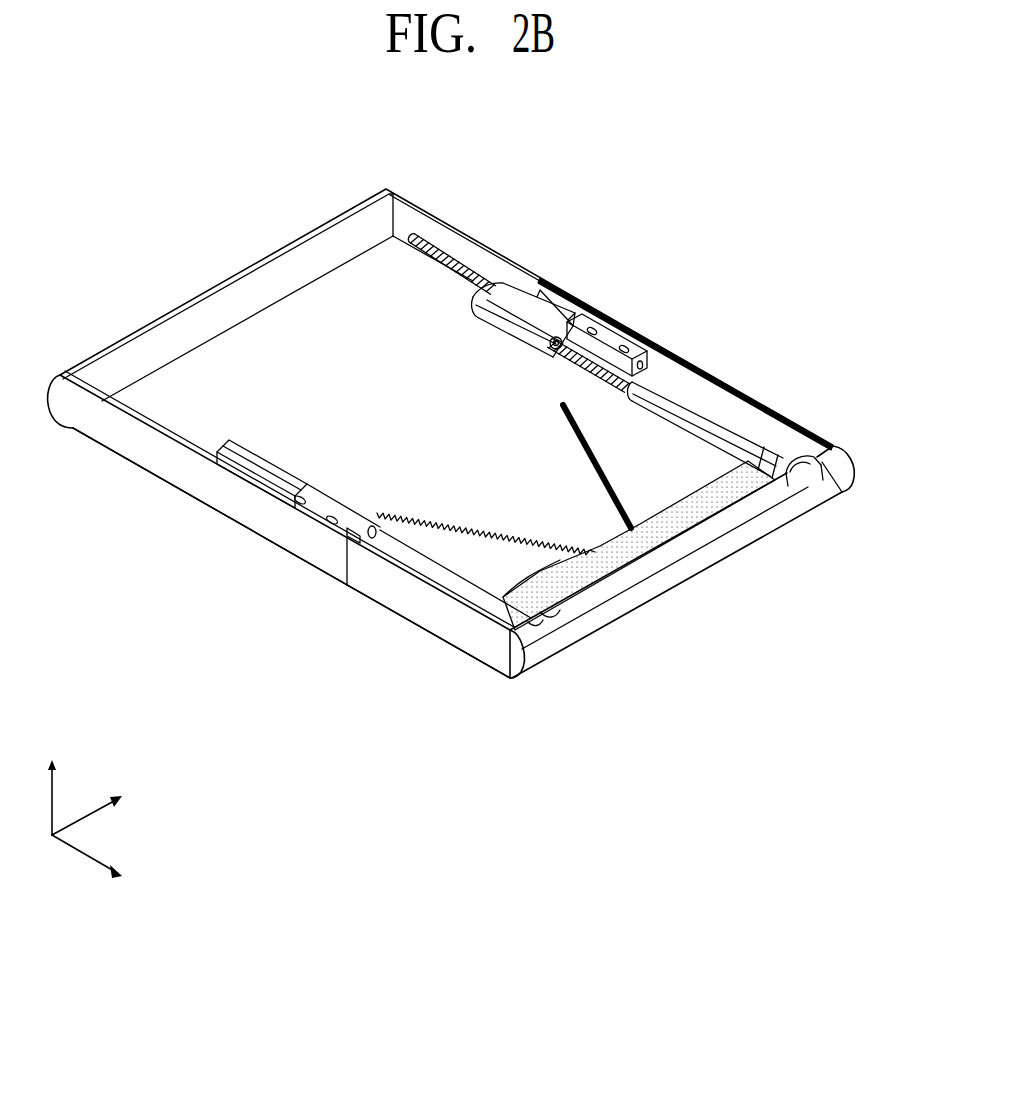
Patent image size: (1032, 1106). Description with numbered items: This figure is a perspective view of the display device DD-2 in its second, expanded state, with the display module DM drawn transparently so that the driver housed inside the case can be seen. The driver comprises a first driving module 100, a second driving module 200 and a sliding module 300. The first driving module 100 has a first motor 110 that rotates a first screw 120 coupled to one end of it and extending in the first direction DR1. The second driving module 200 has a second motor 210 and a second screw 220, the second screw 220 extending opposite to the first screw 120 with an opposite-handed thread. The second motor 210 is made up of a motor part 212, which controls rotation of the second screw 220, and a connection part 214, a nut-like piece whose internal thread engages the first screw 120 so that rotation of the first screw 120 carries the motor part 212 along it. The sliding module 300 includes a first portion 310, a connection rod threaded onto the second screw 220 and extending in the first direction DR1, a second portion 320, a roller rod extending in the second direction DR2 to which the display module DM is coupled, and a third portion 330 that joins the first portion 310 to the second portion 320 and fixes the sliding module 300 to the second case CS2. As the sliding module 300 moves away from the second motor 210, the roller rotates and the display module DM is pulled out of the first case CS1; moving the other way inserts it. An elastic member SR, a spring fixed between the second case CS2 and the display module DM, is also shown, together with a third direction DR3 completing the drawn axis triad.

The display device DD-2 is at (756, 175).
The first driving module 100 is at (291, 164).
The first motor 110 is at (568, 370).
The first screw 120 is at (437, 270).
The second driving module 200 is at (637, 211).
The second motor 210 is at (582, 231).
The motor part 212 is at (497, 308).
The connection part 214 is at (537, 303).
The second screw 220 is at (560, 322).
The sliding module 300 is at (777, 603).
The first portion 310 is at (818, 476).
The second portion 320 is at (710, 523).
The third portion 330 is at (800, 485).
The display module DM is at (614, 553).
The elastic member SR is at (458, 530).
The first case CS1 is at (266, 526).
The second case CS2 is at (508, 660).
The first direction DR1 is at (112, 867).
The second direction DR2 is at (112, 811).
The third direction DR3 is at (53, 782).